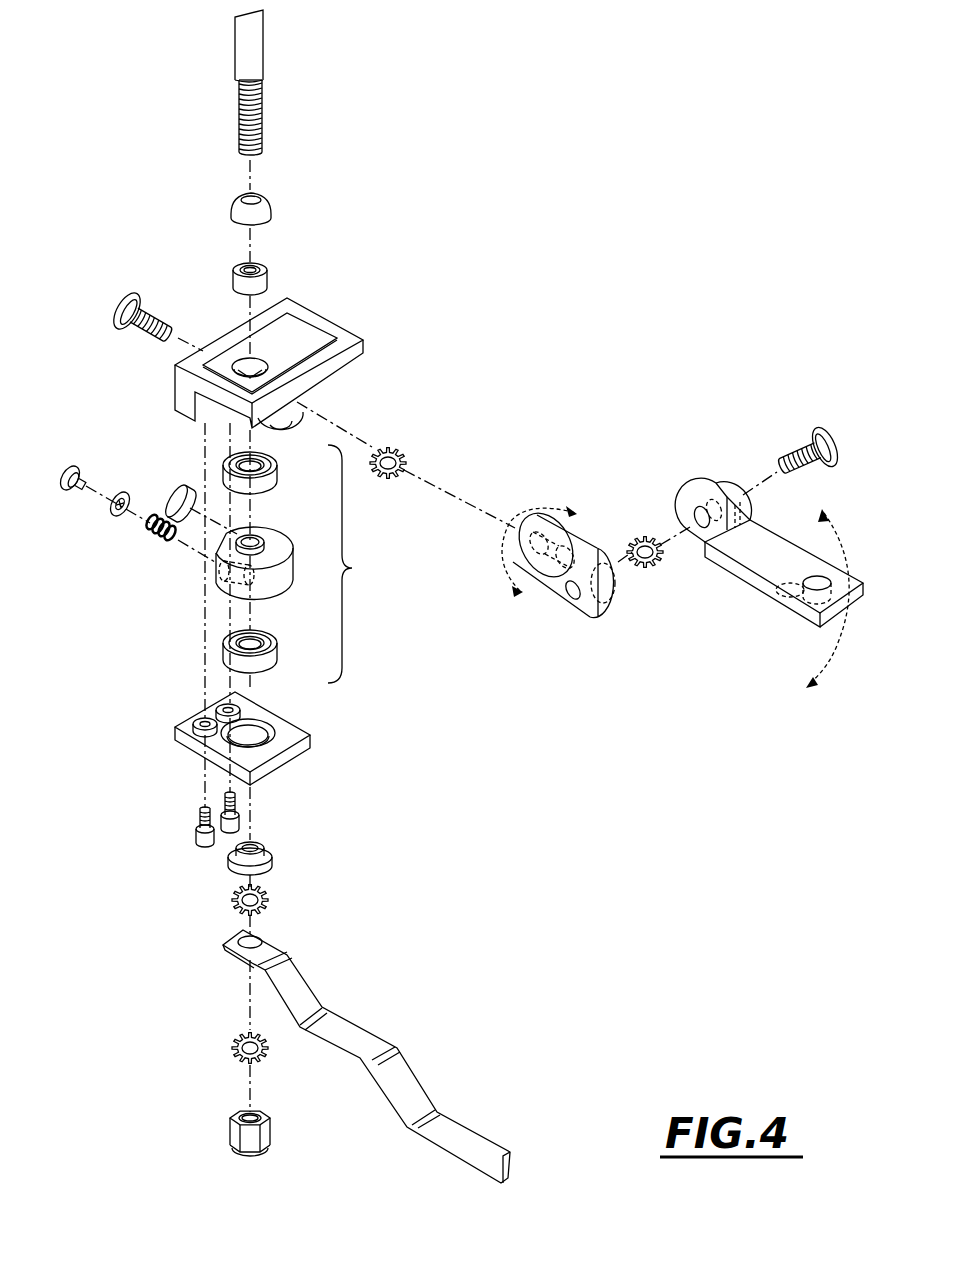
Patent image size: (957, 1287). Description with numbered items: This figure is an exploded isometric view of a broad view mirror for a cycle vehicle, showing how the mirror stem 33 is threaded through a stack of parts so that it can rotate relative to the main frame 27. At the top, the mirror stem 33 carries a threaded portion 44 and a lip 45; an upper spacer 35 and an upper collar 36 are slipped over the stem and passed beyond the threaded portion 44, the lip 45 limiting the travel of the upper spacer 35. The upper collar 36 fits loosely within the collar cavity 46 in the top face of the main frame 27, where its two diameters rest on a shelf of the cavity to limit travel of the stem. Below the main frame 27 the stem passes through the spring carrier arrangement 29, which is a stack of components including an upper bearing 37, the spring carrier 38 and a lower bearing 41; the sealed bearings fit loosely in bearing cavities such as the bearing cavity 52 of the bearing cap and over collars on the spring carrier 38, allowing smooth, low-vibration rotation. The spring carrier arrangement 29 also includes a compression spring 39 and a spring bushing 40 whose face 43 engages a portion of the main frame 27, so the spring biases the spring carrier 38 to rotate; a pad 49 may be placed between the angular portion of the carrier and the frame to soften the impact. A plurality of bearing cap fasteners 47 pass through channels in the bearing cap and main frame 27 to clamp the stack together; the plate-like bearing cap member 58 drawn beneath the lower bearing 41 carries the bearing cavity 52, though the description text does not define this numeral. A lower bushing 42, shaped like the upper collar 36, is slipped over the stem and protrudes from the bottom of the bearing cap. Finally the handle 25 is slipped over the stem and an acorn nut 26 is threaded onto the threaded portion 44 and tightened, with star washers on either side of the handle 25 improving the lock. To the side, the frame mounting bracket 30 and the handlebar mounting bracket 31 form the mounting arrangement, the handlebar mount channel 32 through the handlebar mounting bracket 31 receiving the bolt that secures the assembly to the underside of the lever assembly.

The handle 25 is at (468, 1138).
The acorn nut 26 is at (272, 1137).
The main frame 27 is at (279, 362).
The spring carrier arrangement 29 is at (358, 564).
The frame mounting bracket 30 is at (557, 588).
The handlebar mounting bracket 31 is at (769, 583).
The handlebar mount channel 32 is at (813, 575).
The mirror stem 33 is at (258, 48).
The upper spacer 35 is at (268, 212).
The upper collar 36 is at (268, 280).
The upper bearing 37 is at (278, 480).
The spring carrier 38 is at (286, 572).
The compression spring 39 is at (150, 538).
The spring bushing 40 is at (88, 472).
The lower bearing 41 is at (278, 653).
The lower bushing 42 is at (275, 857).
The face 43 is at (134, 501).
The threaded portion 44 is at (258, 135).
The lip 45 is at (238, 88).
The collar cavity 46 is at (237, 362).
The bearing cap fasteners 47 is at (229, 832).
The pad 49 is at (183, 485).
The bearing cavity 52 is at (265, 722).
The retainer plate 58 is at (260, 733).